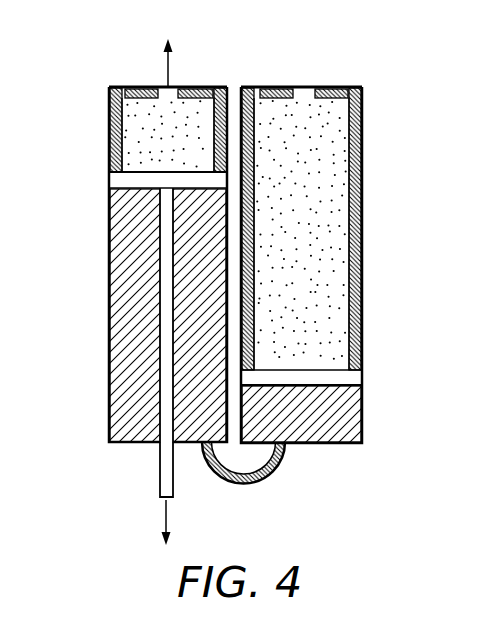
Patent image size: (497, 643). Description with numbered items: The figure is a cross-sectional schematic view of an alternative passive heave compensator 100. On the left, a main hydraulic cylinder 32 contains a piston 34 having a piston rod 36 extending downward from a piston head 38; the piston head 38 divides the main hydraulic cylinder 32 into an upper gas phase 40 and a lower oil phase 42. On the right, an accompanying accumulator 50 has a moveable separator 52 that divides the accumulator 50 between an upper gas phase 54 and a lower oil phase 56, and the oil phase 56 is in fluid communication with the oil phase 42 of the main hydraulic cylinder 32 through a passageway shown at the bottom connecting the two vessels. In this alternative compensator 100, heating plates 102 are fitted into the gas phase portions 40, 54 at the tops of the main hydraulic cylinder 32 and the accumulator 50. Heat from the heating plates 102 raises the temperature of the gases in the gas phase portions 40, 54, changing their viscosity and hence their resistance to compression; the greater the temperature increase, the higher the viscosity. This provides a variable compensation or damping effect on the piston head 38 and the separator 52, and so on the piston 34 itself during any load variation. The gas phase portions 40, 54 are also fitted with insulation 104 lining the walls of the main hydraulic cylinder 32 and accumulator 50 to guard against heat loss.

The alternative passive heave compensator 100 is at (105, 65).
The heating plates 102 is at (148, 88).
The insulation 104 is at (112, 110).
The gas phase 40 is at (130, 143).
The piston head 38 is at (130, 178).
The oil phase 42 is at (118, 246).
The main hydraulic cylinder 32 is at (108, 293).
The piston 34 is at (165, 343).
The piston rod 36 is at (158, 480).
The gas phase 54 is at (340, 133).
The accumulator 50 is at (363, 208).
The moveable separator 52 is at (350, 377).
The oil phase 56 is at (350, 410).